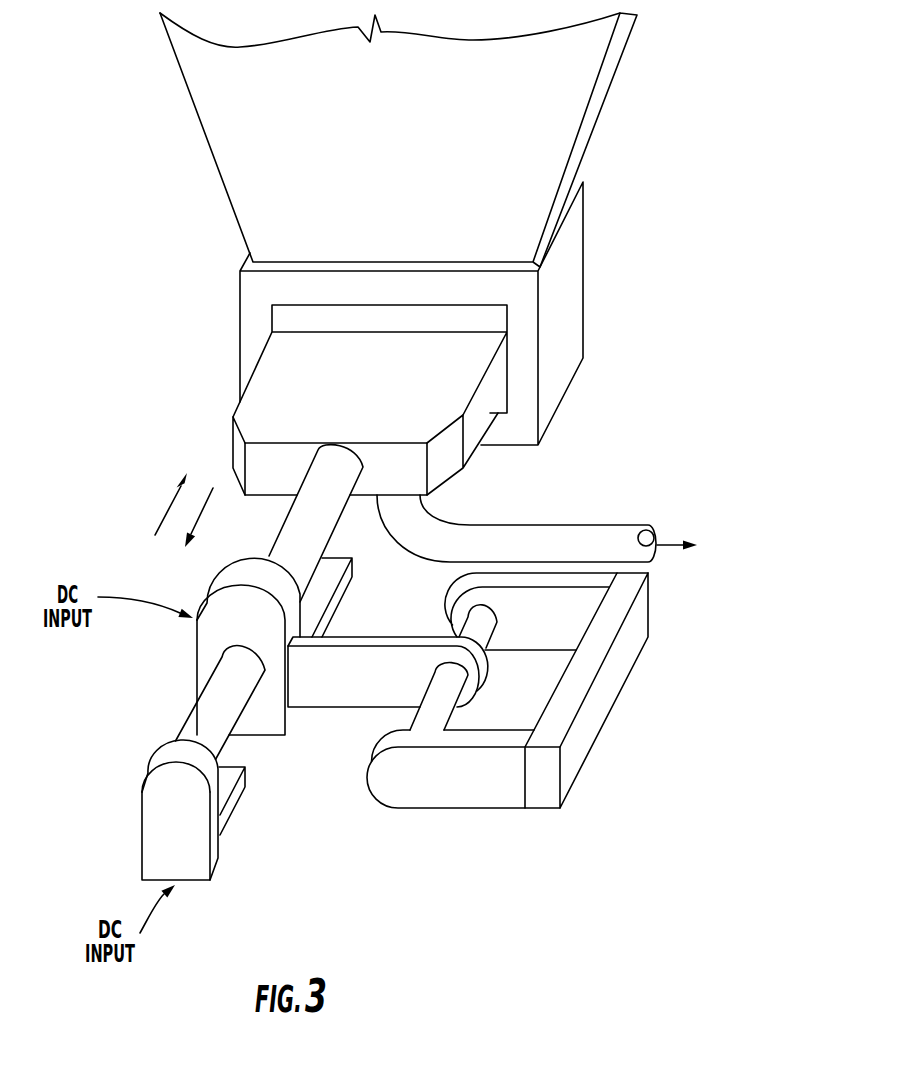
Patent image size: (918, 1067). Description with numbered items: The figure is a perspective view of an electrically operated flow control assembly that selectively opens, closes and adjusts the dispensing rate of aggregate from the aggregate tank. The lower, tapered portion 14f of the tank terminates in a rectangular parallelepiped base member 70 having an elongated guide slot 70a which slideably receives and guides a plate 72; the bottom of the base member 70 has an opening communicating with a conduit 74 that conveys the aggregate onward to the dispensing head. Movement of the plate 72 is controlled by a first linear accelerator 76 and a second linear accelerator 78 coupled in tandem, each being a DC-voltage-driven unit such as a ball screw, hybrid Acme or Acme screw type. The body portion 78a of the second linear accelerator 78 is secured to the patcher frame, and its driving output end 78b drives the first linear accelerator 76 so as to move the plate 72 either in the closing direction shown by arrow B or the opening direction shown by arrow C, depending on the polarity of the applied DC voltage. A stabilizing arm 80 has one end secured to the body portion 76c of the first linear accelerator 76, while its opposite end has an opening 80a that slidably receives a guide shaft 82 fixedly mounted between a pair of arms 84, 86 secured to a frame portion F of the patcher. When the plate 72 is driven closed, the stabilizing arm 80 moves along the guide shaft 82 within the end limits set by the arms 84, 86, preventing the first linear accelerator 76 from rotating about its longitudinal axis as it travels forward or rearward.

The lower tapered portion 14f is at (189, 95).
The base member 70 is at (240, 298).
The elongated guide slot 70a is at (273, 322).
The plate 72 is at (477, 423).
The conduit 74 is at (605, 530).
The first linear accelerator 76 is at (180, 576).
The body portion 76c is at (197, 637).
The second linear accelerator 78 is at (115, 839).
The body portion 78a is at (147, 808).
The driving output end 78b is at (207, 720).
The stabilizing arm 80 is at (353, 697).
The opening 80a is at (428, 713).
The guide shaft 82 is at (485, 621).
The arm 84 is at (527, 580).
The arm 86 is at (447, 797).
The arrow B is at (167, 510).
The arrow C is at (203, 507).
The frame portion F is at (577, 733).